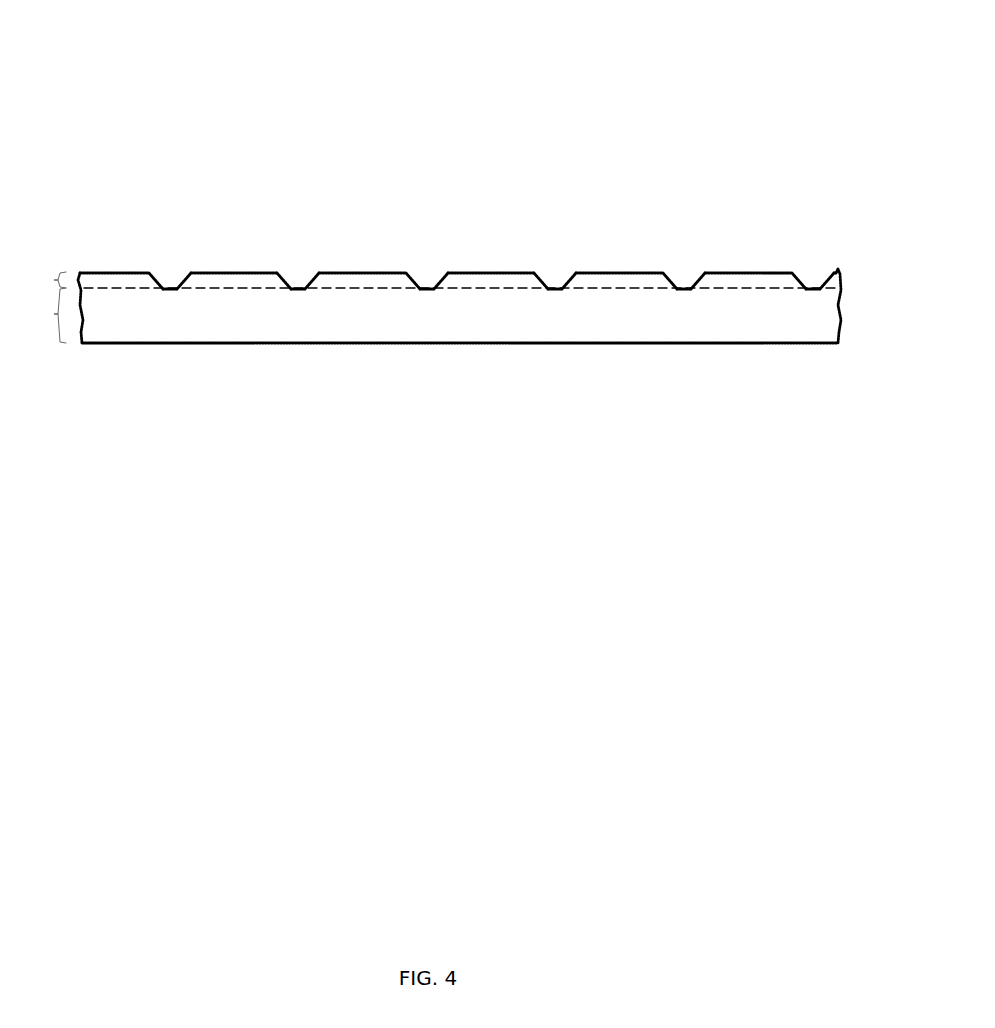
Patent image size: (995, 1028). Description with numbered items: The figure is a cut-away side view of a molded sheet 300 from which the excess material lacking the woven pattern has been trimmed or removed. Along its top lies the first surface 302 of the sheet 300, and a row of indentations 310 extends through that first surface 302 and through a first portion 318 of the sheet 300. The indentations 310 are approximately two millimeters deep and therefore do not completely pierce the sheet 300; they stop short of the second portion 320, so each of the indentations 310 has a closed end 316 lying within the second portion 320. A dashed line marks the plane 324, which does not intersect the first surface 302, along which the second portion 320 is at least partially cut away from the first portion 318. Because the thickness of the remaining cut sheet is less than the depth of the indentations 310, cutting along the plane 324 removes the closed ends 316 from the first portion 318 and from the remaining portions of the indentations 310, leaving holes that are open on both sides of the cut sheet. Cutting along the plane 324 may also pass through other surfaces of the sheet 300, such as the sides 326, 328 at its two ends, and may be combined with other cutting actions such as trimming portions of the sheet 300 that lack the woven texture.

The sheet 300 is at (380, 97).
The first surface 302 is at (500, 272).
The indentations 310 is at (172, 272).
The closed ends 316 is at (168, 290).
The first portion 318 is at (37, 277).
The second portion 320 is at (38, 315).
The plane 324 is at (616, 289).
The side 326 is at (841, 307).
The side 328 is at (90, 338).